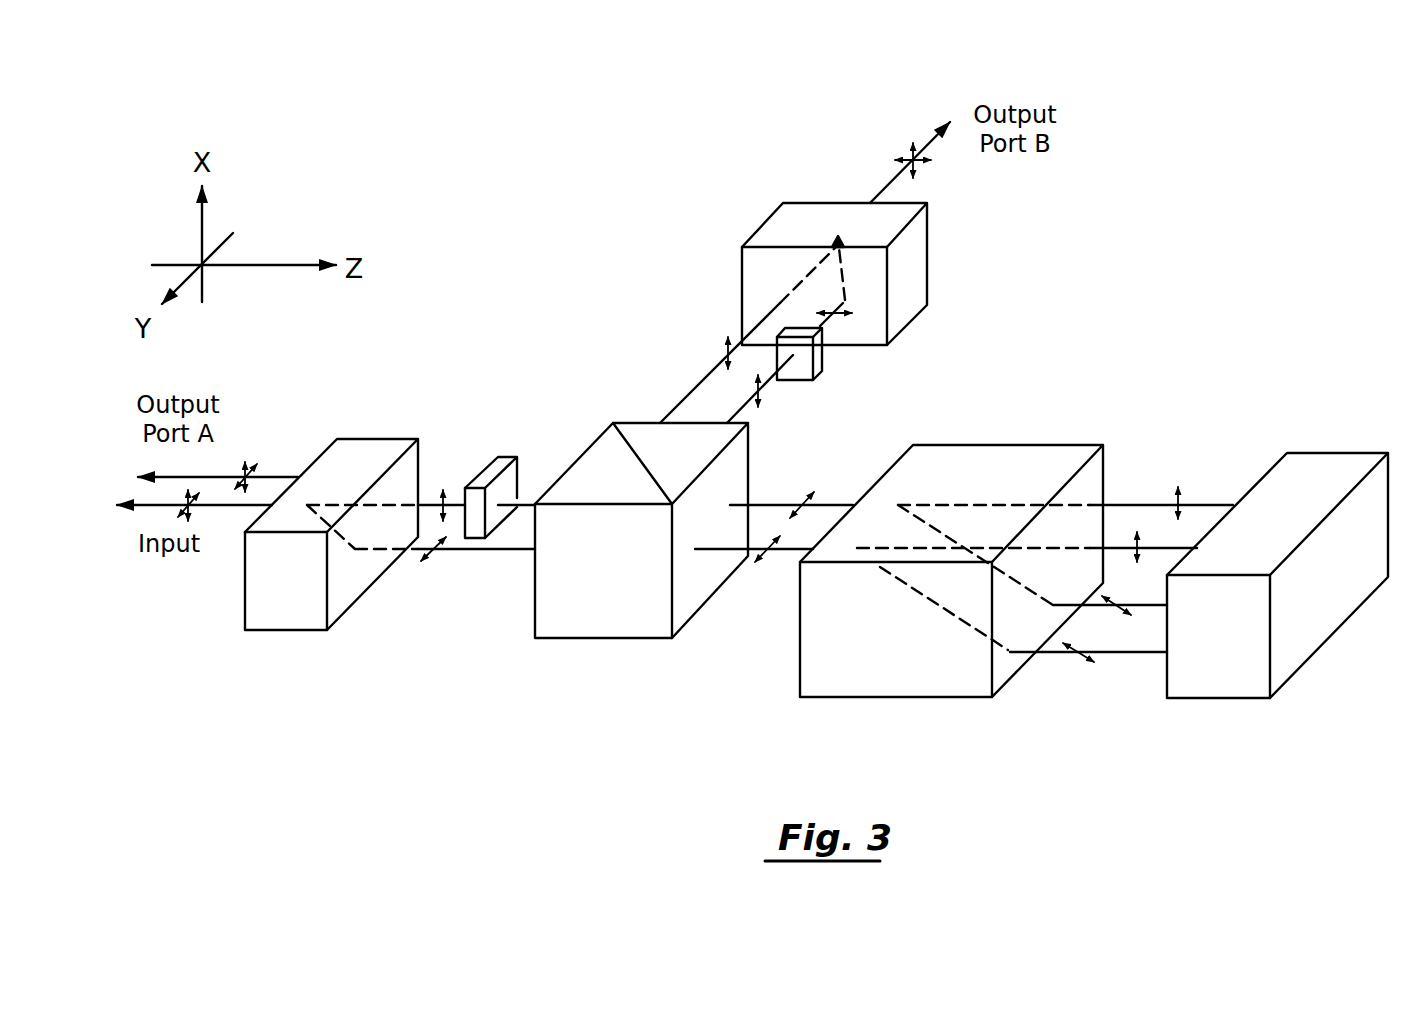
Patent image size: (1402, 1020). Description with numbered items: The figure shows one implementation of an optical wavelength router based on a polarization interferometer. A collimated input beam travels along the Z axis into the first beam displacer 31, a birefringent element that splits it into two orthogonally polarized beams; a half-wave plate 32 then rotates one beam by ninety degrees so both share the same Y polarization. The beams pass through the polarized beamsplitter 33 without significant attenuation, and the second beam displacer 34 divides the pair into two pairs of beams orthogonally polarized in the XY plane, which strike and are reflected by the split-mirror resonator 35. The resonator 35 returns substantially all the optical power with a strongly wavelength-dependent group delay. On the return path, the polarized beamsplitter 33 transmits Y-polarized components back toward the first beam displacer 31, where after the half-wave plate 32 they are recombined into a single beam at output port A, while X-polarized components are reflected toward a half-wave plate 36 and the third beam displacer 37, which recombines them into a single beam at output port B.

The first beam displacer 31 is at (375, 452).
The half-wave plate 32 is at (508, 457).
The polarized beamsplitter 33 is at (607, 620).
The second beam displacer 34 is at (1032, 460).
The split-mirror resonator 35 is at (1310, 472).
The half-wave plate 36 is at (823, 353).
The third beam displacer 37 is at (763, 227).